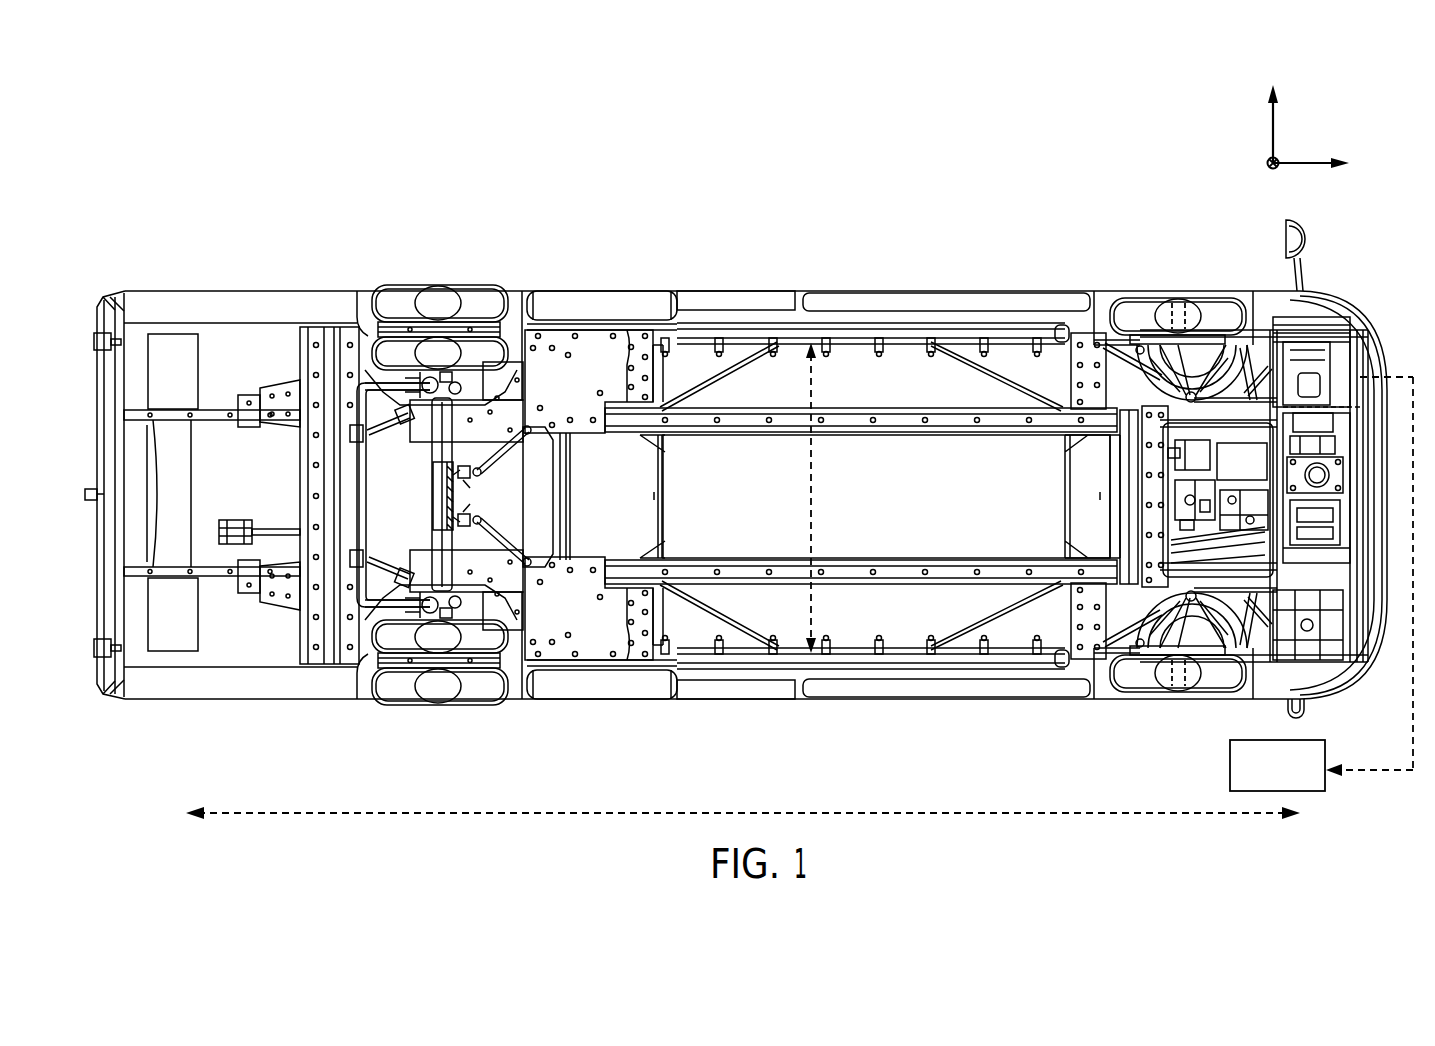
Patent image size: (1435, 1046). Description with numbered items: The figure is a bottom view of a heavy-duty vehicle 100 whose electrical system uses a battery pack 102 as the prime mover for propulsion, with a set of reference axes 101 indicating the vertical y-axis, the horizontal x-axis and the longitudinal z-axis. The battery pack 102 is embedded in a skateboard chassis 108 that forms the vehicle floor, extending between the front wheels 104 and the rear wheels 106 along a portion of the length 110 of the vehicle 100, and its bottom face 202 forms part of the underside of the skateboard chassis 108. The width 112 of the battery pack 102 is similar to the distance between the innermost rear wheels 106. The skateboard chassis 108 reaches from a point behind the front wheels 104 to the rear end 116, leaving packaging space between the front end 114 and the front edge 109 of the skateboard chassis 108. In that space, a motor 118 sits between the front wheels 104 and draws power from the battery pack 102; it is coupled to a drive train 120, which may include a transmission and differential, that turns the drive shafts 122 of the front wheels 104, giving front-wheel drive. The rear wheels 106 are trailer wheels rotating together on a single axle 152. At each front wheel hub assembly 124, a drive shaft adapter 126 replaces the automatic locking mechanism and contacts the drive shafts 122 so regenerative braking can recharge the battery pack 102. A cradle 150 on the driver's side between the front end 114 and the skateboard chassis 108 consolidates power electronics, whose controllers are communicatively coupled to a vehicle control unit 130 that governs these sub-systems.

The heavy-duty vehicle 100 is at (260, 180).
The set of reference axes 101 is at (1315, 116).
The battery pack 102 is at (912, 323).
The front wheels 104 is at (1147, 312).
The rear wheels 106 is at (398, 307).
The skateboard chassis 108 is at (727, 293).
The front edge of the skateboard chassis 109 is at (1093, 318).
The length of the vehicle 110 is at (475, 812).
The width of the battery pack 112 is at (813, 467).
The front end of the vehicle 114 is at (1398, 351).
The rear end of the vehicle 116 is at (80, 384).
The motor 118 is at (1256, 460).
The drive train 120 is at (1246, 542).
The drive shafts 122 is at (1183, 390).
The front wheel hub assemblies 124 is at (1190, 282).
The drive shaft adapter 126 is at (1197, 298).
The vehicle control unit 130 is at (1321, 584).
The cradle 150 is at (1347, 311).
The single axle 152 is at (438, 498).
The bottom face of the battery pack 202 is at (880, 496).